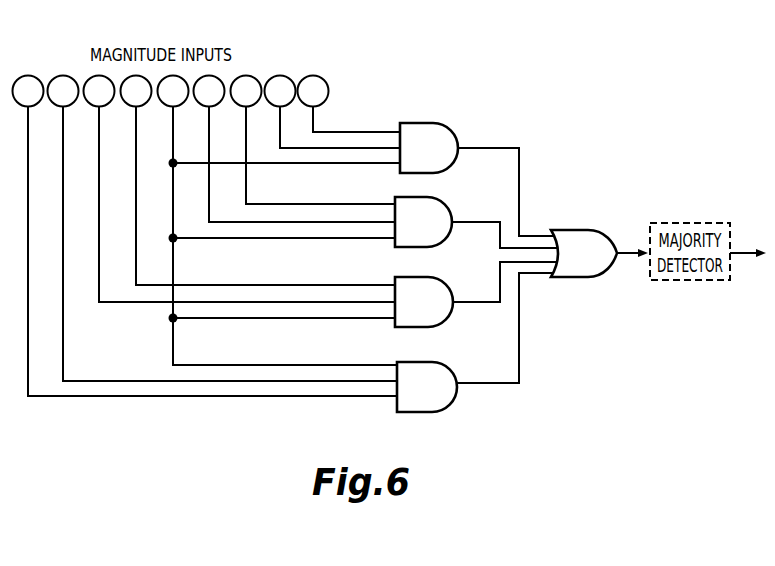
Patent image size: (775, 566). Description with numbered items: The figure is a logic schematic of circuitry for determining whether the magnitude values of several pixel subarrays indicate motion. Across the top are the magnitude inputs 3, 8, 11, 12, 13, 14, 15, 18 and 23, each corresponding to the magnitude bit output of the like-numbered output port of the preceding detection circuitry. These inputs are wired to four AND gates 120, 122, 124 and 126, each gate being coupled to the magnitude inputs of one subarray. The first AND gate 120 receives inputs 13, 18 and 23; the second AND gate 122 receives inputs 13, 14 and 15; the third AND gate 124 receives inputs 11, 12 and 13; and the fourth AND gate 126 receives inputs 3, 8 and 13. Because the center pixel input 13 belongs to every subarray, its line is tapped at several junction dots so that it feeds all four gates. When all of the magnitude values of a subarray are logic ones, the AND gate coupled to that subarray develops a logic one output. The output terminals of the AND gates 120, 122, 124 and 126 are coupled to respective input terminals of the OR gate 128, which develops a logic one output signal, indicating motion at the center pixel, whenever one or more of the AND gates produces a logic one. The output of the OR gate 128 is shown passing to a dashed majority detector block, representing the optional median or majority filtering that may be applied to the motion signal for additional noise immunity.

The magnitude input 3 is at (205, 236).
The magnitude input 8 is at (223, 229).
The magnitude input 11 is at (240, 189).
The magnitude input 12 is at (258, 181).
The magnitude input 13 is at (279, 221).
The magnitude input 14 is at (295, 149).
The magnitude input 15 is at (313, 140).
The magnitude input 18 is at (333, 112).
The magnitude input 23 is at (349, 104).
The AND gate 120 is at (441, 121).
The AND gate 122 is at (441, 198).
The AND gate 124 is at (442, 278).
The AND gate 126 is at (445, 362).
The OR gate 128 is at (577, 278).